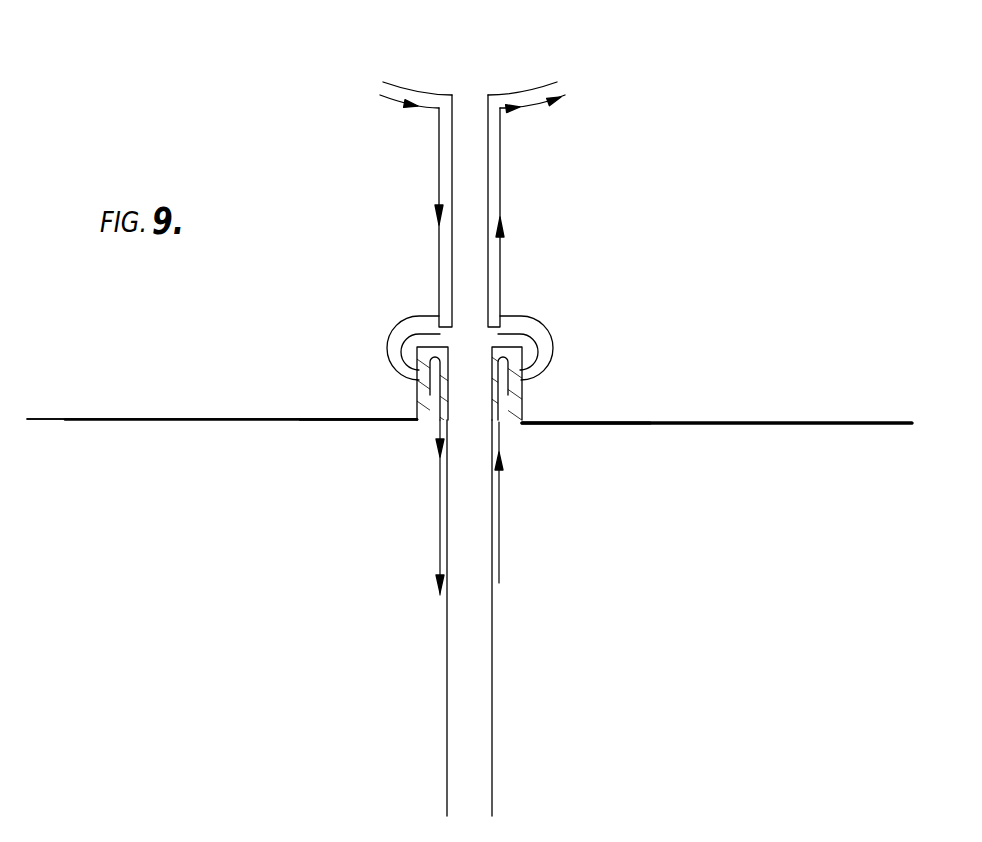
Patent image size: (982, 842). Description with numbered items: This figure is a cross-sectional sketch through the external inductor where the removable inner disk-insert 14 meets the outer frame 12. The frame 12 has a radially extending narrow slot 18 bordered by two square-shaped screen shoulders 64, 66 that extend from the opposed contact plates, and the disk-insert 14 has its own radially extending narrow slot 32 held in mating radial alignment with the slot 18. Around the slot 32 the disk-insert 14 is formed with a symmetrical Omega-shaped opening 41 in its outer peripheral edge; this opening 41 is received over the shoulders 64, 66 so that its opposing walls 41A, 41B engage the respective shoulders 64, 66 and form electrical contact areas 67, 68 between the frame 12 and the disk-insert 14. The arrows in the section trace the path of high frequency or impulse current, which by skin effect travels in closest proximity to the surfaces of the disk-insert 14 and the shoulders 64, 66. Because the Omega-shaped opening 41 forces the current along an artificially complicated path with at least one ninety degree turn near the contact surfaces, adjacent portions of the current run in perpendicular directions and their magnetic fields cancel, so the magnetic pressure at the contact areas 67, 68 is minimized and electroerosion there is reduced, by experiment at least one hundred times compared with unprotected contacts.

The outer frame portion 12 is at (358, 565).
The inner disk-insert 14 is at (665, 297).
The radially extending narrow slot 18 is at (463, 717).
The radially extending narrow slot 32 is at (467, 100).
The Omega-shaped opening 41 is at (550, 342).
The opposing wall of the opening 41A is at (417, 397).
The opposing wall of the opening 41B is at (522, 407).
The screen shoulder 64 is at (441, 347).
The screen shoulder 66 is at (497, 332).
The electrical contact area 67 is at (417, 384).
The electrical contact area 68 is at (522, 400).